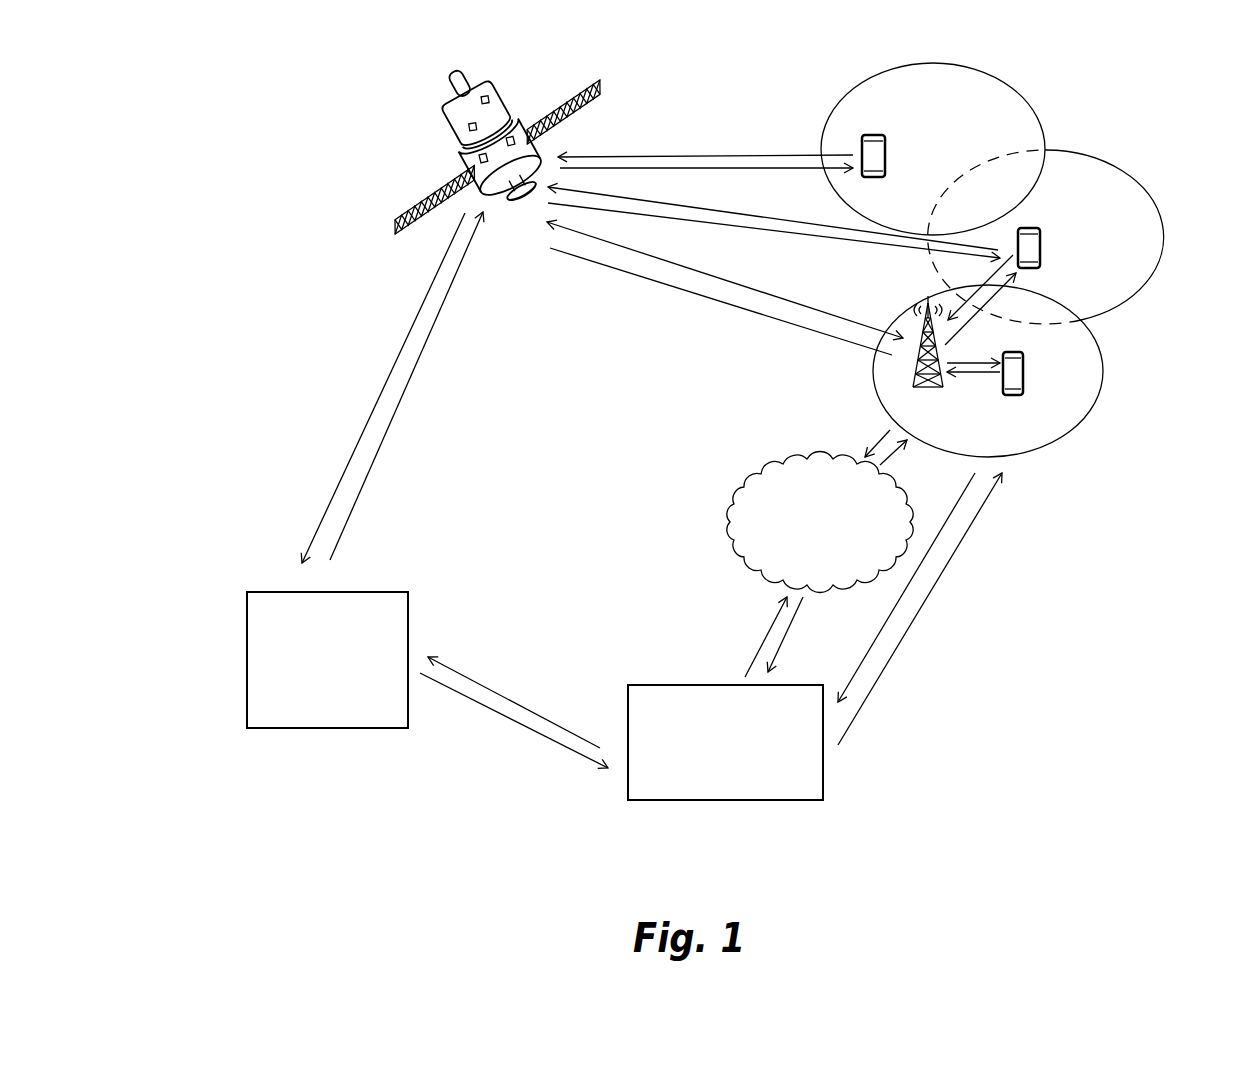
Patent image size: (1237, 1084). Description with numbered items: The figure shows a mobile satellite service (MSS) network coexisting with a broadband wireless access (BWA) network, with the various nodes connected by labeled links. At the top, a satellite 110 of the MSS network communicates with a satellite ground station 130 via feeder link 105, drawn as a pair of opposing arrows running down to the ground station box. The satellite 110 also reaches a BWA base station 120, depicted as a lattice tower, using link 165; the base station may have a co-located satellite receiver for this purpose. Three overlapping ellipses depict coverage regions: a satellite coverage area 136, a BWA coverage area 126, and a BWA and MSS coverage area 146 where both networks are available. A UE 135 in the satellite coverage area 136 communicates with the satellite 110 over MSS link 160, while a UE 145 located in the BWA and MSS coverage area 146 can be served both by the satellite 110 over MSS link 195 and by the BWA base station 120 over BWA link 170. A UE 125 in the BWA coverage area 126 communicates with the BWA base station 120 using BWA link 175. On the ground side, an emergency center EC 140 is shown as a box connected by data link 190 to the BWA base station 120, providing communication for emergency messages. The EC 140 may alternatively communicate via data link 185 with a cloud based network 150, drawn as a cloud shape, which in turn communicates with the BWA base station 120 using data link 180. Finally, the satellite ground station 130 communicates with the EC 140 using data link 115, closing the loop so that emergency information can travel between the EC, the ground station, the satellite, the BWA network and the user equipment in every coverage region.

The feeder link 105 is at (392, 387).
The satellite 110 is at (447, 78).
The data link 115 is at (514, 712).
The BWA base station 120 is at (915, 385).
The UE 125 is at (1007, 397).
The BWA coverage area 126 is at (1095, 403).
The satellite ground station 130 is at (247, 678).
The UE 135 is at (872, 133).
The satellite coverage area 136 is at (1030, 103).
The EC 140 is at (790, 802).
The UE 145 is at (1027, 223).
The BWA and MSS coverage area 146 is at (1165, 225).
The cloud based network 150 is at (762, 478).
The MSS link 160 is at (705, 152).
The link 165 is at (725, 288).
The BWA link 170 is at (984, 300).
The BWA link 175 is at (973, 357).
The data link 180 is at (875, 447).
The data link 185 is at (772, 637).
The data link 190 is at (920, 609).
The MSS link 195 is at (774, 222).